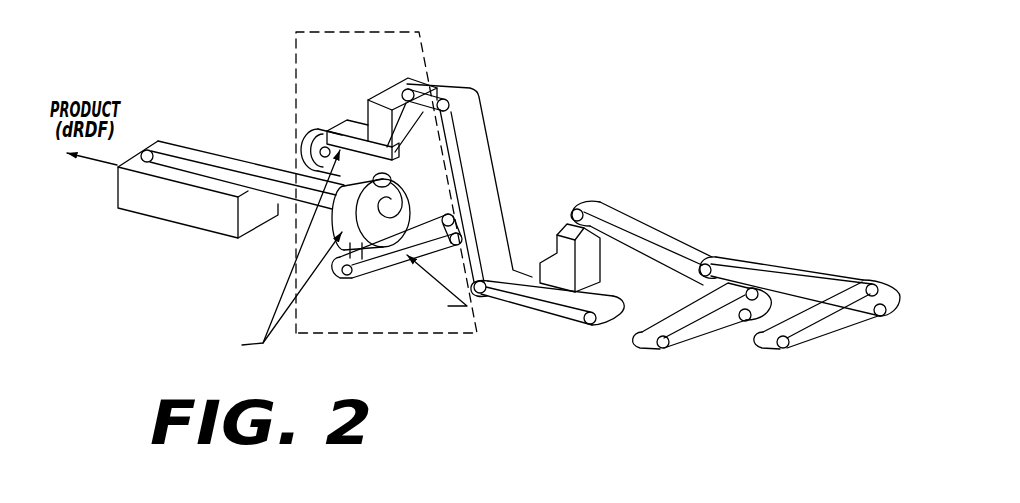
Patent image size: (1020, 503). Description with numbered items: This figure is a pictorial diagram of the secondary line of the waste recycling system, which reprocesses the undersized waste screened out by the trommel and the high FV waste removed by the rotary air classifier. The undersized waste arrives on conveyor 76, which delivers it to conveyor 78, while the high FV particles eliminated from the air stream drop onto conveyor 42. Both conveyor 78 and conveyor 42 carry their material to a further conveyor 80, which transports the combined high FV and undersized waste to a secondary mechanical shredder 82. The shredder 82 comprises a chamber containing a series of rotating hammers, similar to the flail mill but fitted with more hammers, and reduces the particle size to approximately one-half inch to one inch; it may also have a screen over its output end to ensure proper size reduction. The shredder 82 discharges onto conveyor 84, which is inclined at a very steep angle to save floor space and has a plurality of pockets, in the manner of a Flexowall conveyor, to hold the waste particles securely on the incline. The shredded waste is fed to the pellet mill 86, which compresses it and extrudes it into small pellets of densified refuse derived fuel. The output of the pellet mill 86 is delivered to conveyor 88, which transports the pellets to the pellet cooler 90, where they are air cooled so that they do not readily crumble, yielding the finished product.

The conveyor 42 is at (650, 352).
The conveyor 76 is at (770, 353).
The conveyor 78 is at (753, 253).
The conveyor 80 is at (626, 209).
The secondary mechanical shredder 82 is at (550, 224).
The conveyor 84 is at (453, 80).
The pellet mill 86 is at (405, 29).
The conveyor 88 is at (205, 66).
The pellet cooler 90 is at (138, 212).